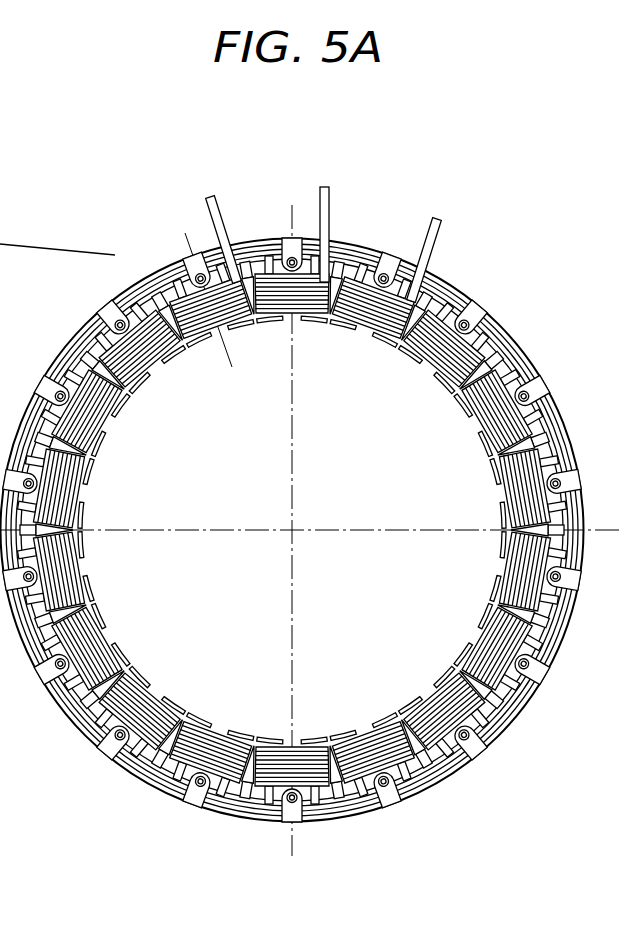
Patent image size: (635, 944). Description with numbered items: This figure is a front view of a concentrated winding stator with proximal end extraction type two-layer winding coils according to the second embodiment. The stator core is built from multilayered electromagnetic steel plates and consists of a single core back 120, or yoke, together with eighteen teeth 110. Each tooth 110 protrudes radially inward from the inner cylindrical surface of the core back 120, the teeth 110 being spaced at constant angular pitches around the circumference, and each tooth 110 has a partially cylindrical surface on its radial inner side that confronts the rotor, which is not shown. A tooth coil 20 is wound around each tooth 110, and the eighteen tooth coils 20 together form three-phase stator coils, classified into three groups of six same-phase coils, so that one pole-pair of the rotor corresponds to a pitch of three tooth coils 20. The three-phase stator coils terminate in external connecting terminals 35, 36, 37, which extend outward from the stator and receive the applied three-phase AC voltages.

The tooth coil 20 is at (468, 410).
The tooth 110 is at (365, 328).
The core back 120 is at (448, 290).
The external connecting terminal 35 is at (219, 196).
The external connecting terminal 36 is at (326, 186).
The external connecting terminal 37 is at (437, 217).